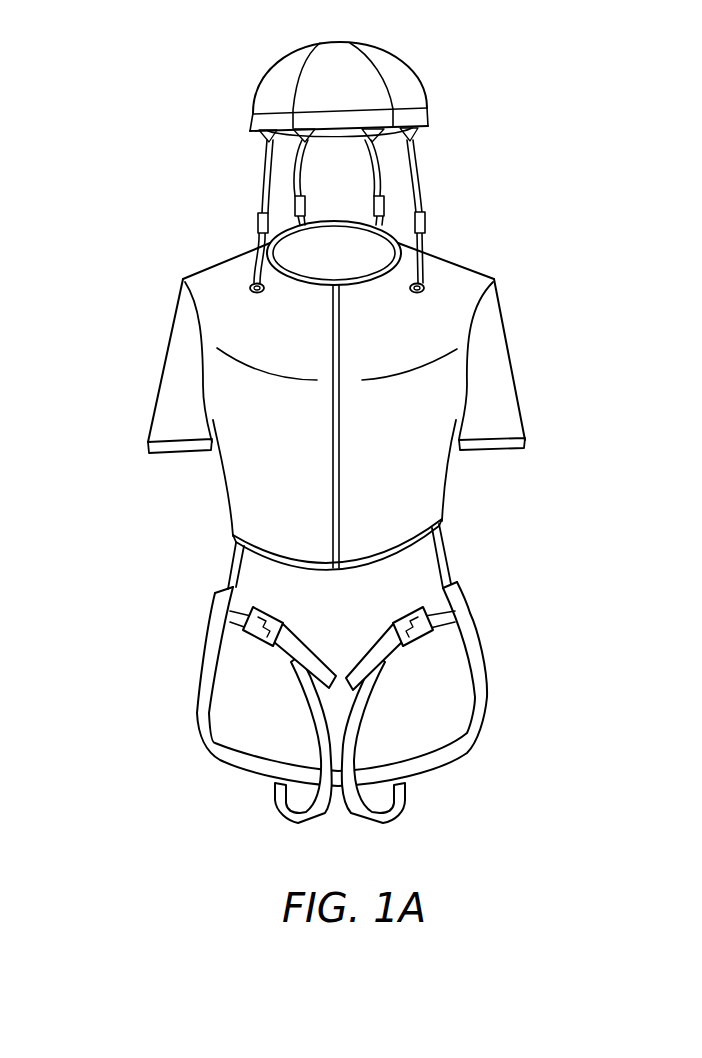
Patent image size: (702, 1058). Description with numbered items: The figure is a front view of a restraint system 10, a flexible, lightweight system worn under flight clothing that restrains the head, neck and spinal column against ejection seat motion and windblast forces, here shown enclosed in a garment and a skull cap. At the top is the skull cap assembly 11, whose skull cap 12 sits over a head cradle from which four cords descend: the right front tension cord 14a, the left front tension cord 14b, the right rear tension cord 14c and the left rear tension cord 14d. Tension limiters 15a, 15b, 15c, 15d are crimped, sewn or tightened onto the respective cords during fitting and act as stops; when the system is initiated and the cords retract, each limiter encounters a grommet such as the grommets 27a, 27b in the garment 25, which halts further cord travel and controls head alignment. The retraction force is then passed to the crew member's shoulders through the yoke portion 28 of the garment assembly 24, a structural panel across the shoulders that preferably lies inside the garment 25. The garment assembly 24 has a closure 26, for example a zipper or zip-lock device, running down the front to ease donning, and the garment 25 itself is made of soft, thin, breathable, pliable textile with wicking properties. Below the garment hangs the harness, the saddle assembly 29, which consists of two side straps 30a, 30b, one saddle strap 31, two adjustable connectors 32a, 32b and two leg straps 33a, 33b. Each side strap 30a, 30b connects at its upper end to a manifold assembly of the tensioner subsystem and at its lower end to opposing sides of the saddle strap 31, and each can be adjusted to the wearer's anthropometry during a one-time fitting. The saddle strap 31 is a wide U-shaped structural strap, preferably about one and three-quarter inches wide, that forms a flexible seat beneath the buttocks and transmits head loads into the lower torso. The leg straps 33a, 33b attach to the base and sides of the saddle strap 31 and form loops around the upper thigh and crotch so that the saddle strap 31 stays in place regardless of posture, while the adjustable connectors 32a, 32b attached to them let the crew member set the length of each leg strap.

The restraint system 10 is at (155, 167).
The skull cap assembly 11 is at (562, 48).
The skull cap 12 is at (268, 88).
The right front tension cord 14a is at (267, 183).
The left front tension cord 14b is at (414, 176).
The right rear tension cord 14c is at (294, 178).
The left rear tension cord 14d is at (380, 171).
The tension limiter 15a is at (260, 221).
The tension limiter 15b is at (424, 223).
The tension limiter 15c is at (295, 203).
The tension limiter 15d is at (385, 203).
The garment assembly 24 is at (583, 272).
The garment 25 is at (282, 439).
The closure 26 is at (333, 496).
The grommet 27a is at (251, 287).
The grommet 27b is at (425, 288).
The yoke portion 28 is at (235, 336).
The saddle assembly 29 is at (532, 540).
The side strap 30a is at (230, 585).
The side strap 30b is at (445, 561).
The saddle strap 31 is at (208, 666).
The adjustable connector 32a is at (255, 646).
The adjustable connector 32b is at (427, 649).
The leg strap 33a is at (276, 800).
The leg strap 33b is at (404, 804).